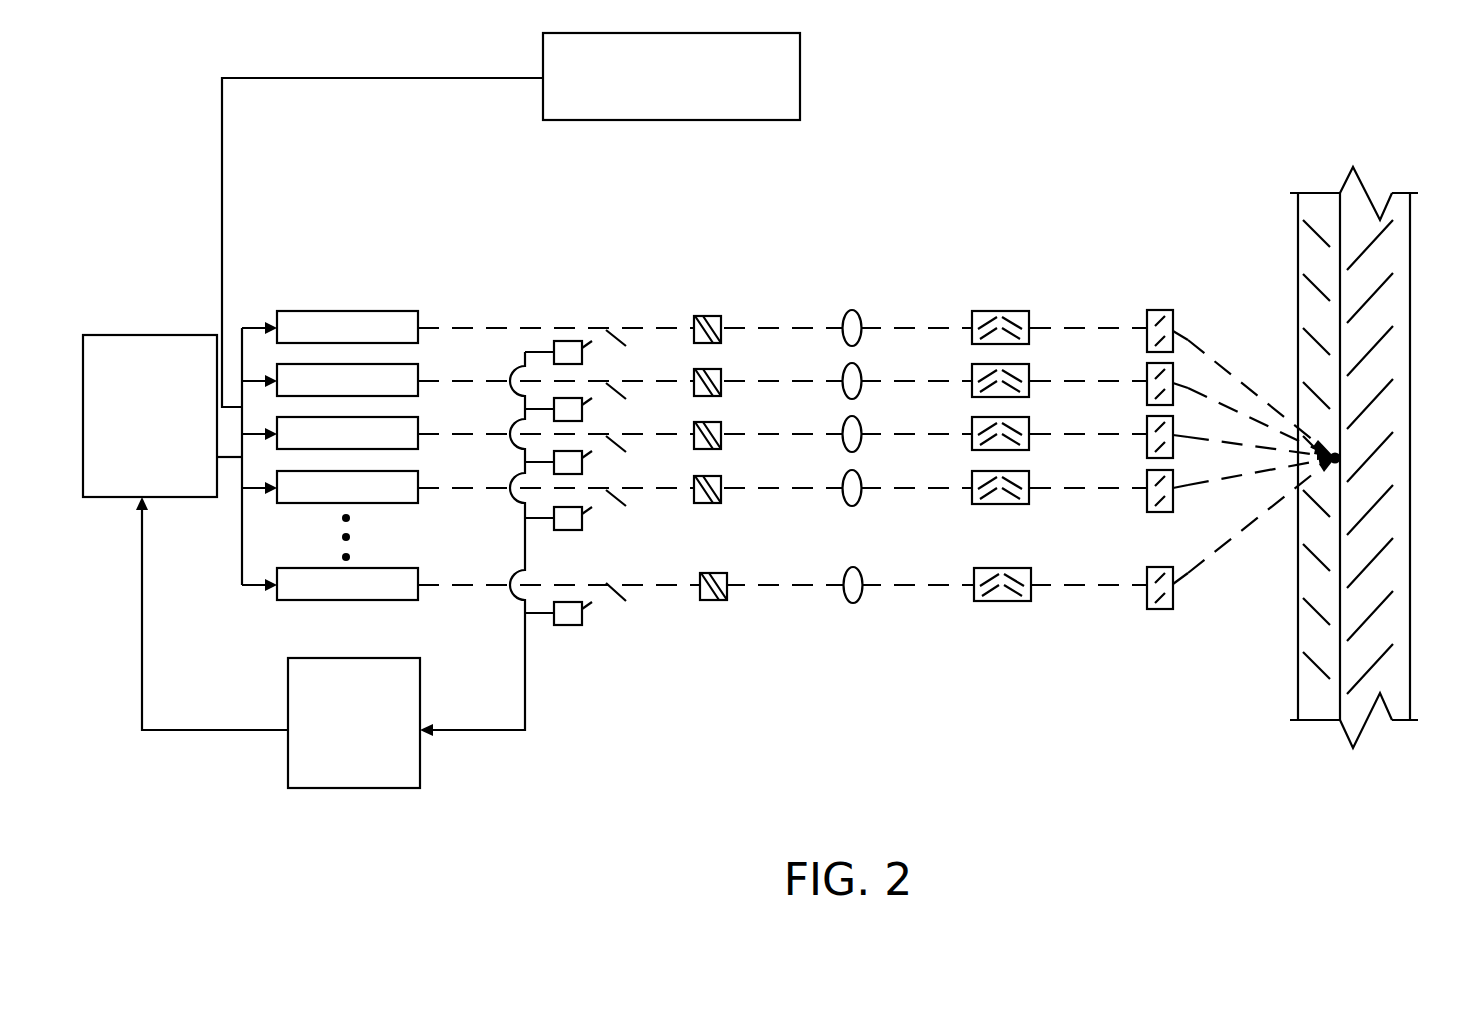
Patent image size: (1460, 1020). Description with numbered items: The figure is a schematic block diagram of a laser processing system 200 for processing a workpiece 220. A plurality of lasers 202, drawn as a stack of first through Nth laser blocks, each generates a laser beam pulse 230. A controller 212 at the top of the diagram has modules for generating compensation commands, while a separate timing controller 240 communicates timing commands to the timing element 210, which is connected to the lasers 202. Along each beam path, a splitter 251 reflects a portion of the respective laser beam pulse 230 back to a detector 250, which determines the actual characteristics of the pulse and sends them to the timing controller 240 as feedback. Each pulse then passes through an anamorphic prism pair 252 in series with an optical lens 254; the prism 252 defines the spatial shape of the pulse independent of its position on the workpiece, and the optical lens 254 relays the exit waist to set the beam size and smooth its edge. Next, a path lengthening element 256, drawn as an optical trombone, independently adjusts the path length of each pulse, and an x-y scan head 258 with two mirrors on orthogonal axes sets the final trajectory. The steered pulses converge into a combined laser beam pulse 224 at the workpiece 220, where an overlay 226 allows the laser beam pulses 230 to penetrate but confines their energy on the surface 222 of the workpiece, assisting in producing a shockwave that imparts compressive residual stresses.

The laser processing system 200 is at (1252, 54).
The lasers 202 is at (390, 311).
The timing element 210 is at (162, 416).
The controller 212 is at (511, 220).
The workpiece 220 is at (1328, 457).
The surface 222 is at (1337, 687).
The combined laser beam pulse 224 is at (1338, 462).
The overlay 226 is at (1315, 632).
The laser beam pulse 230 is at (458, 326).
The timing controller 240 is at (278, 642).
The detectors 250 is at (565, 341).
The splitters 251 is at (617, 338).
The anamorphic prism pair 252 is at (713, 316).
The optical lens 254 is at (853, 310).
The path lengthening elements 256 is at (998, 311).
The scan heads 258 is at (1160, 310).